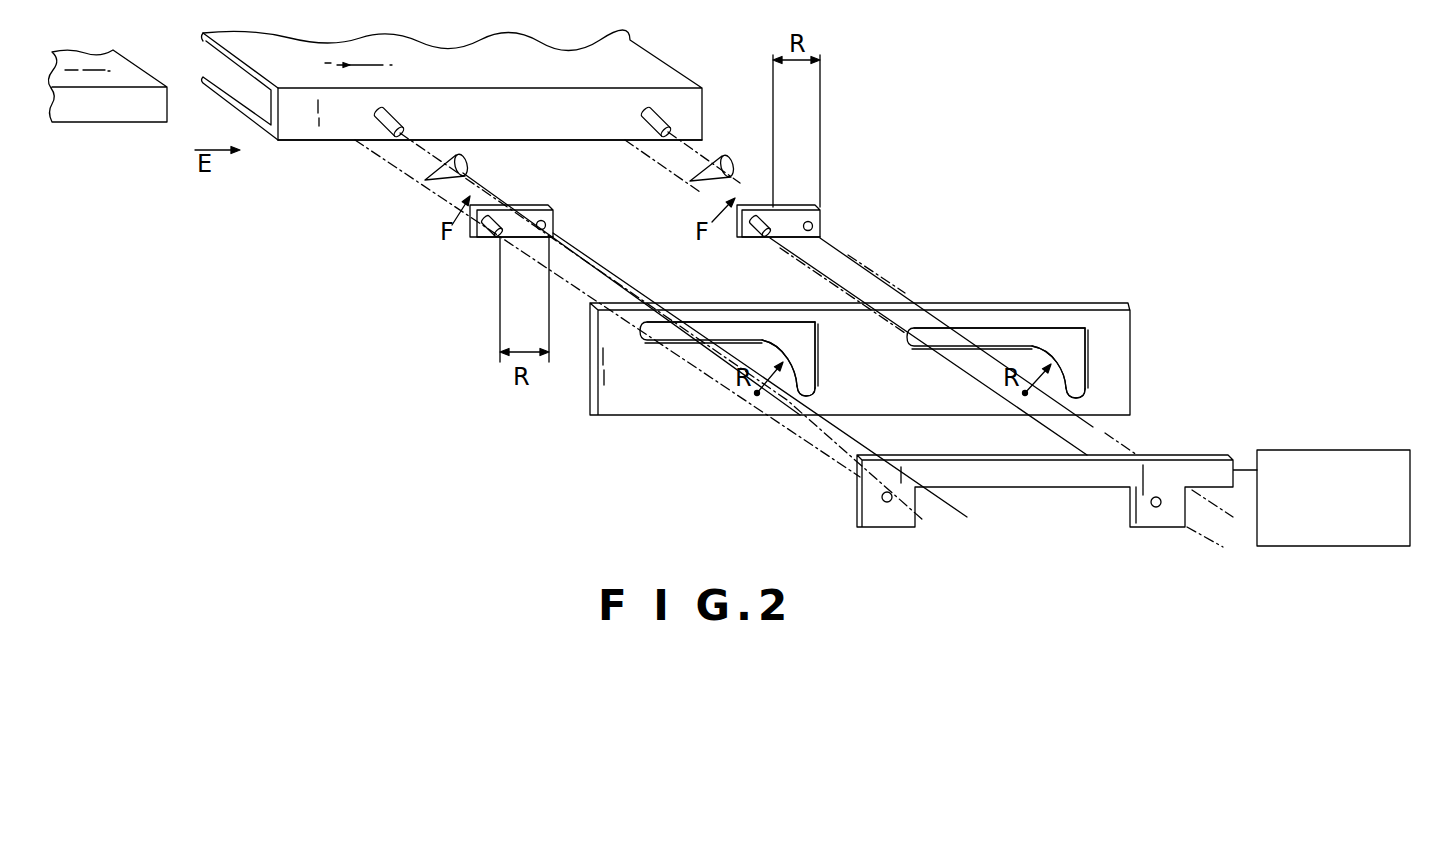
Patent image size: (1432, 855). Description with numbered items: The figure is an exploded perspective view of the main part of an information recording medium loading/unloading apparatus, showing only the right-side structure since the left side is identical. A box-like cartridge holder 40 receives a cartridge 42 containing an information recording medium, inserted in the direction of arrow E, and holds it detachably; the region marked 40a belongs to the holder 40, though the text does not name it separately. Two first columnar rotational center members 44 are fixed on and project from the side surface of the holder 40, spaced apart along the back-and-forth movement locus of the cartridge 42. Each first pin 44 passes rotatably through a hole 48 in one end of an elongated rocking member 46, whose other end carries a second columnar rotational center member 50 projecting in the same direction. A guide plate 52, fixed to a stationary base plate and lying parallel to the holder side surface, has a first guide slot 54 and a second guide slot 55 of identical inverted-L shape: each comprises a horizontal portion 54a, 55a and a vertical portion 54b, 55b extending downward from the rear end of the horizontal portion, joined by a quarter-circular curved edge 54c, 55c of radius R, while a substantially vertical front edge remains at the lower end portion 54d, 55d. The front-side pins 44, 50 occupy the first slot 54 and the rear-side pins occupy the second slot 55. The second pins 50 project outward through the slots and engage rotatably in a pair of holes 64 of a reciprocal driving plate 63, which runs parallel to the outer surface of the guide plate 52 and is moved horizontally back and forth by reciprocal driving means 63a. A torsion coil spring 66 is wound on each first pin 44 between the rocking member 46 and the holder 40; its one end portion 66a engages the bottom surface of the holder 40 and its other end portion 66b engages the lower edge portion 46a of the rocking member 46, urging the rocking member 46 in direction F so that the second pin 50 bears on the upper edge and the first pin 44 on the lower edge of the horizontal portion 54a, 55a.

The cartridge holder 40 is at (655, 48).
The front wall of holder block 40a is at (318, 141).
The cartridge 42 is at (108, 122).
The first rotational center member 44 is at (374, 123).
The rocking member 46 is at (527, 206).
The lower edge portion of the rocking member 46a is at (530, 238).
The hole 48 is at (548, 226).
The second rotational center member 50 is at (492, 237).
The guide plate 52 is at (650, 397).
The first guide slot 54 is at (809, 345).
The horizontal portion 54a is at (668, 331).
The vertical portion 54b is at (813, 356).
The curved edge 54c is at (762, 340).
The lower end portion 54d is at (816, 389).
The second guide slot 55 is at (1077, 345).
The horizontal portion 55a is at (946, 334).
The vertical portion 55b is at (1090, 358).
The curved edge 55c is at (1050, 345).
The lower end portion 55d is at (1092, 390).
The reciprocal driving plate 63 is at (1043, 492).
The reciprocal driving means 63a is at (1318, 450).
The hole 64 is at (882, 498).
The torsion coil spring 66 is at (470, 152).
The one end portion of the torsion coil spring 66a is at (424, 180).
The other end portion of the torsion coil spring 66b is at (423, 187).